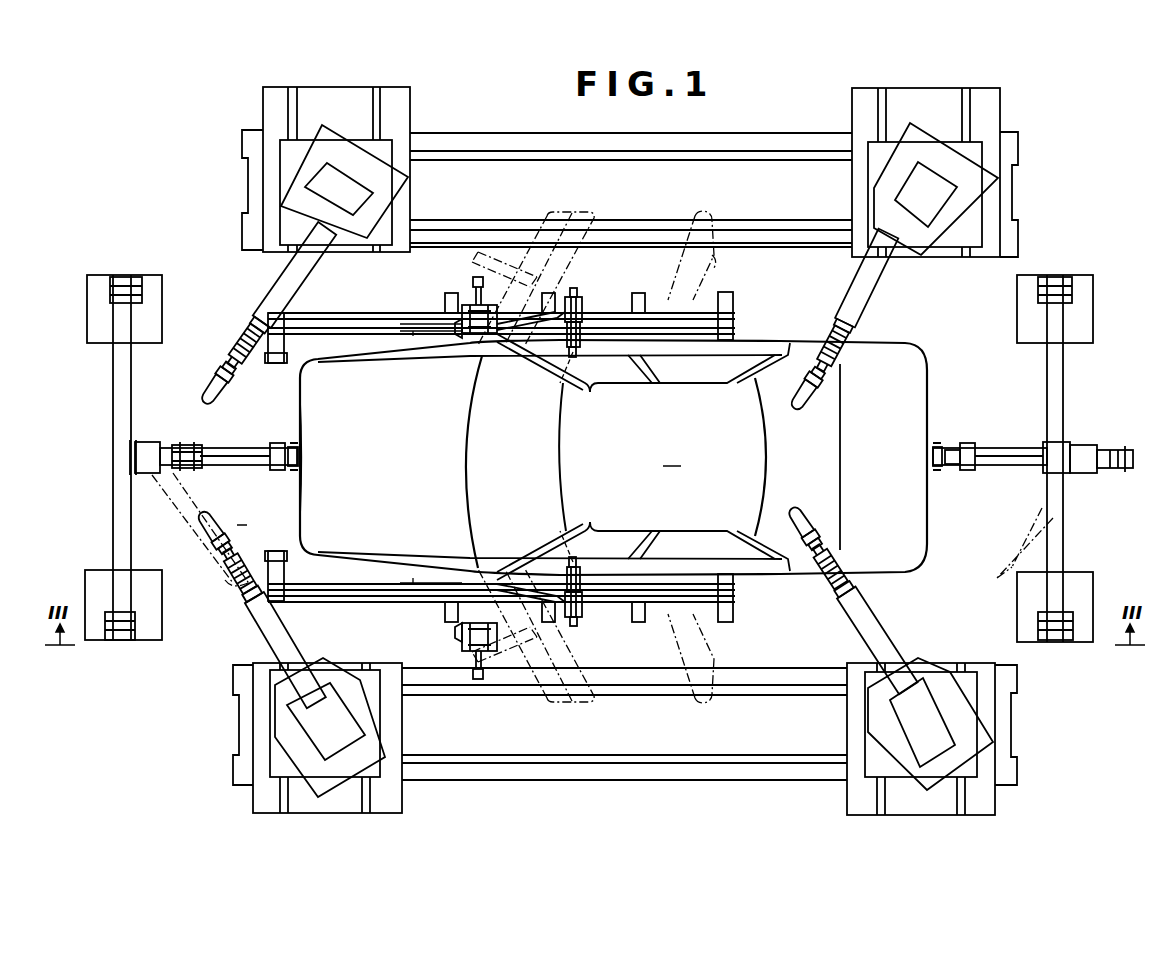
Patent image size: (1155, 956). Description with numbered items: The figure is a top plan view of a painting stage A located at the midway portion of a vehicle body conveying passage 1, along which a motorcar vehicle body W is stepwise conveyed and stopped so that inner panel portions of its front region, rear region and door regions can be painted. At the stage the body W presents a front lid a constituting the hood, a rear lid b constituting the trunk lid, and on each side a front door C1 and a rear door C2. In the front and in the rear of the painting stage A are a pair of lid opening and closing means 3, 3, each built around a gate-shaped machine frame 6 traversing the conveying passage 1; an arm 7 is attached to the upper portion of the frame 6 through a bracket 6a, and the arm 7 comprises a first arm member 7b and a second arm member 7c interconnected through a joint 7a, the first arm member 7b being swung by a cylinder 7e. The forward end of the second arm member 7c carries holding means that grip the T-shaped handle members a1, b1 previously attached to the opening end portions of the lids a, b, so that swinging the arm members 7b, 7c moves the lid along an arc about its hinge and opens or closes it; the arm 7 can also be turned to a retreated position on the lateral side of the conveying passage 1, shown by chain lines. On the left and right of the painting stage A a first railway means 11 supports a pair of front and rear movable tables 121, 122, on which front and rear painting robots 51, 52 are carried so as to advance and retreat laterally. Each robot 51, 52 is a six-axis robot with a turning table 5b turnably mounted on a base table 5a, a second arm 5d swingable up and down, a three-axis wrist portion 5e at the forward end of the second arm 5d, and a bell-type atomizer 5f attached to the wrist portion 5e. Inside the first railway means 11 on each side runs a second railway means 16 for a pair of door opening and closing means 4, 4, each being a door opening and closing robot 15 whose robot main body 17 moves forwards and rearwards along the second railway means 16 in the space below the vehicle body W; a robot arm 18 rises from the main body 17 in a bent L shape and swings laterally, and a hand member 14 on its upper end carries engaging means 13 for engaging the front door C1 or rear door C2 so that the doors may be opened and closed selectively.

The vehicle body conveying passage 1 is at (243, 514).
The lid opening and closing means 3 is at (108, 487).
The door opening and closing means 4 is at (443, 299).
The front painting robot 51 is at (398, 193).
The rear painting robot 52 is at (982, 212).
The base table 5a is at (288, 213).
The turning table 5b is at (298, 175).
The second arm 5d is at (260, 317).
The wrist portion 5e is at (230, 363).
The bell-type atomizer 5f is at (200, 406).
The gate-shaped machine frame 6 is at (118, 422).
The bracket 6a is at (150, 446).
The arm 7 is at (233, 447).
The joint 7a is at (278, 446).
The first arm member 7b is at (225, 458).
The second arm member 7c is at (294, 446).
The cylinder 7e is at (187, 443).
The first railway means 11 is at (536, 127).
The front movable table 121 is at (405, 110).
The rear movable table 122 is at (858, 118).
The engaging means 13 is at (572, 355).
The hand member 14 is at (582, 307).
The door opening and closing robot 15 is at (528, 343).
The second railway means 16 is at (405, 313).
The robot main body 17 is at (472, 340).
The robot arm 18 is at (535, 345).
The motorcar vehicle body W is at (747, 397).
The painting stage A is at (672, 455).
The front lid a is at (308, 508).
The rear lid b is at (929, 505).
The handle member a1 is at (287, 464).
The handle member b1 is at (940, 464).
The front door C1 is at (617, 358).
The rear door C2 is at (705, 358).